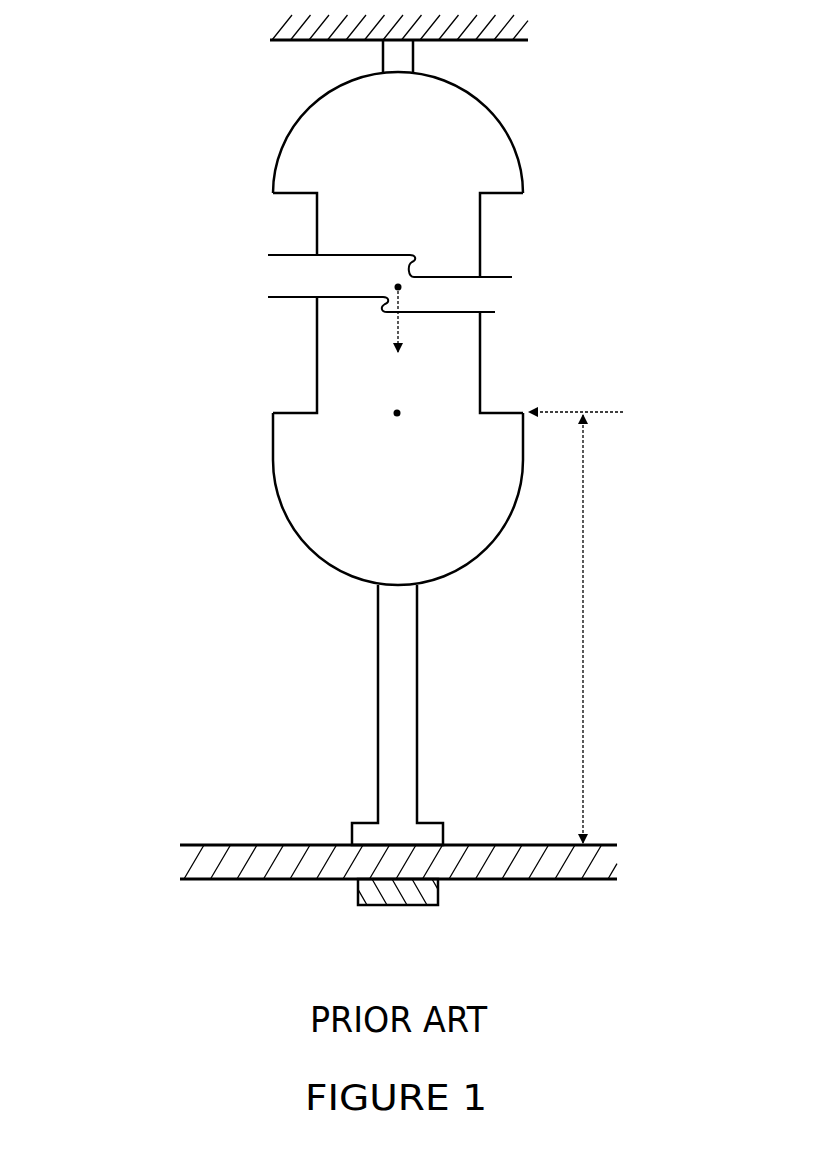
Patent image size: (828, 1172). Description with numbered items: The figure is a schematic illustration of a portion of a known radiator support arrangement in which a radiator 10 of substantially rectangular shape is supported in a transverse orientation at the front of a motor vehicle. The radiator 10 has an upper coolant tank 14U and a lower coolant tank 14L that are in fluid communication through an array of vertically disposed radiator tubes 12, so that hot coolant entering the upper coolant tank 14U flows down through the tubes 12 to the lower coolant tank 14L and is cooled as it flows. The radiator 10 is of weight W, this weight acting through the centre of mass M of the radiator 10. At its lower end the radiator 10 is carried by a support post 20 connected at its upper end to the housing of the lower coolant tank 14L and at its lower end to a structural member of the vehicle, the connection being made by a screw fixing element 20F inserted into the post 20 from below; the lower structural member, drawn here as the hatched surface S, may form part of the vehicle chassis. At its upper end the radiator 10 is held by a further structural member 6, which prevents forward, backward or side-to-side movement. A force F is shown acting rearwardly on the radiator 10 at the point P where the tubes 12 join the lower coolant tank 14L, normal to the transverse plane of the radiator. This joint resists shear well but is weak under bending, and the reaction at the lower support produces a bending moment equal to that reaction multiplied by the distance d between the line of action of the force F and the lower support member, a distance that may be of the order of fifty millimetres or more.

The further structural member 6 is at (507, 28).
The radiator 10 is at (378, 509).
The upper coolant tank 14U is at (465, 143).
The radiator tubes 12 is at (453, 360).
The lower coolant tank 14L is at (493, 455).
The support post 20 is at (398, 693).
The screw fixing element 20F is at (438, 897).
The floor surface S is at (242, 862).
The centre of mass M is at (398, 287).
The weight W is at (414, 328).
The pivot point P is at (400, 412).
The force F is at (587, 413).
The distance d is at (595, 629).